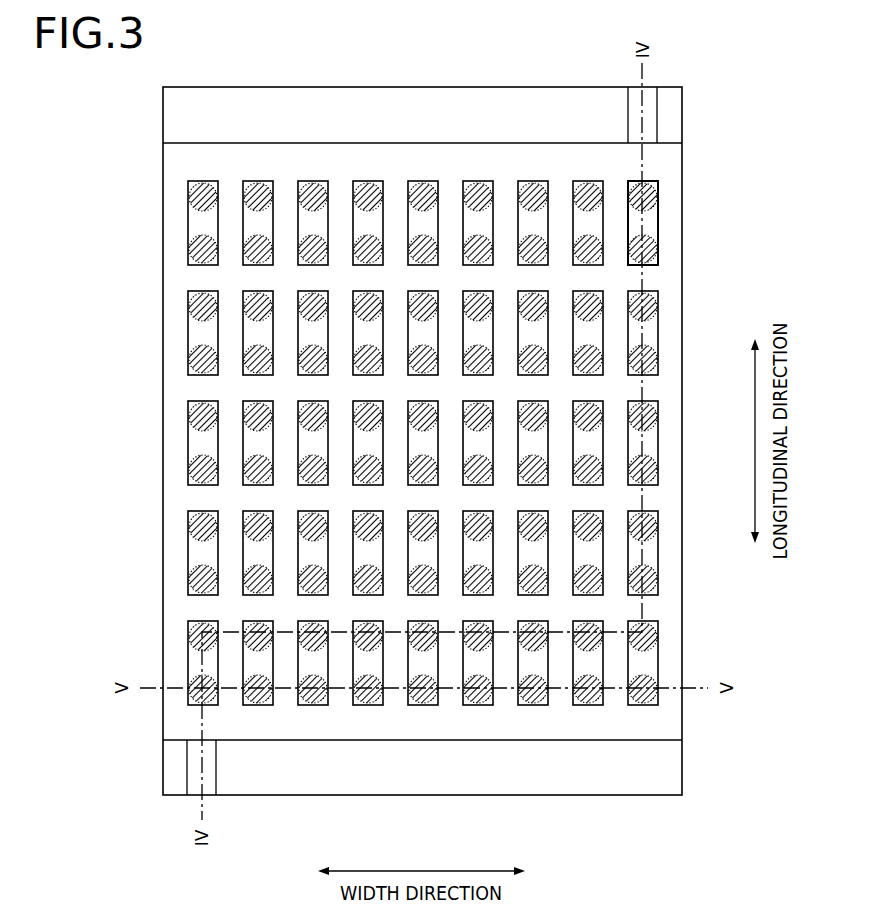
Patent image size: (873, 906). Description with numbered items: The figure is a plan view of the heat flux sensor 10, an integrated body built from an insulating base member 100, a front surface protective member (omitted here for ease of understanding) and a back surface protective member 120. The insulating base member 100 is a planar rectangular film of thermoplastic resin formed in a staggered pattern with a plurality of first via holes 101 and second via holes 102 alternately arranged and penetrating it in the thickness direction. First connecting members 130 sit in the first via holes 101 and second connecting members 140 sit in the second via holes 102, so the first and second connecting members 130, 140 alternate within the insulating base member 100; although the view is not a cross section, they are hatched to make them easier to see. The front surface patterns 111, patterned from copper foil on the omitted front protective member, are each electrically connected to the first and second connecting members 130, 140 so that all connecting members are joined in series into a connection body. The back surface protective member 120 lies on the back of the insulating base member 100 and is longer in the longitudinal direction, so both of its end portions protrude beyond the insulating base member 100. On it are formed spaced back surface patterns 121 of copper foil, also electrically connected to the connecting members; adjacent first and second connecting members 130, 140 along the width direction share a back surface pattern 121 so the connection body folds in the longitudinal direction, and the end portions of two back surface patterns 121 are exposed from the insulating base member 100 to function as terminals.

The heat flux sensor 10 is at (151, 755).
The insulating base member 100 is at (472, 160).
The back surface protective member 120 is at (527, 117).
The back surface patterns 121 is at (632, 113).
The second via holes 102 is at (657, 197).
The second connecting members 140 is at (686, 230).
The front surface patterns 111 is at (652, 223).
The first via holes 101 is at (657, 257).
The first connecting members 130 is at (654, 266).